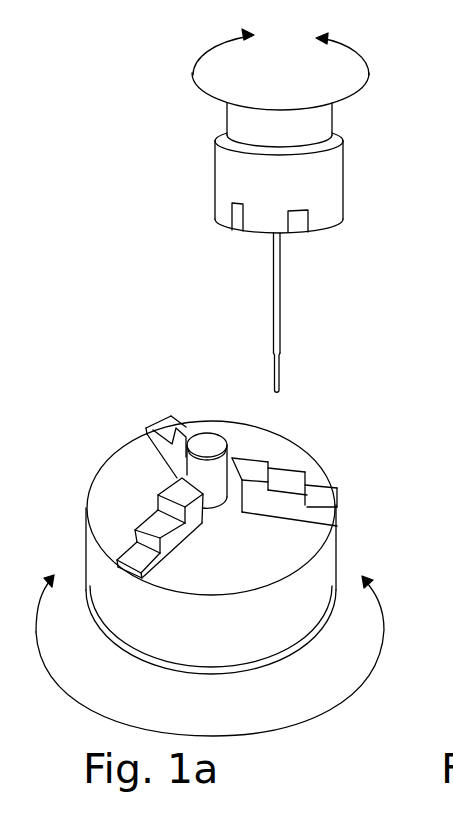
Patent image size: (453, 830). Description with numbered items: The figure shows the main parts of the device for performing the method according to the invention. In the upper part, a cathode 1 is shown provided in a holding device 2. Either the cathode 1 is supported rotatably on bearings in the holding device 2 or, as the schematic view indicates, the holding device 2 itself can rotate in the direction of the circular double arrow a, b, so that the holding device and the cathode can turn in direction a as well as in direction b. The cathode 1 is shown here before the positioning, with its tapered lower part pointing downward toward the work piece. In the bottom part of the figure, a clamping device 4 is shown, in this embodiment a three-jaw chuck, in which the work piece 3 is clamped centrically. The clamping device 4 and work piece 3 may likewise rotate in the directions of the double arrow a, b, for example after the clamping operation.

The cathode 1 is at (280, 326).
The holding device 2 is at (327, 180).
The work piece 3 is at (207, 443).
The clamping device 4 is at (273, 534).